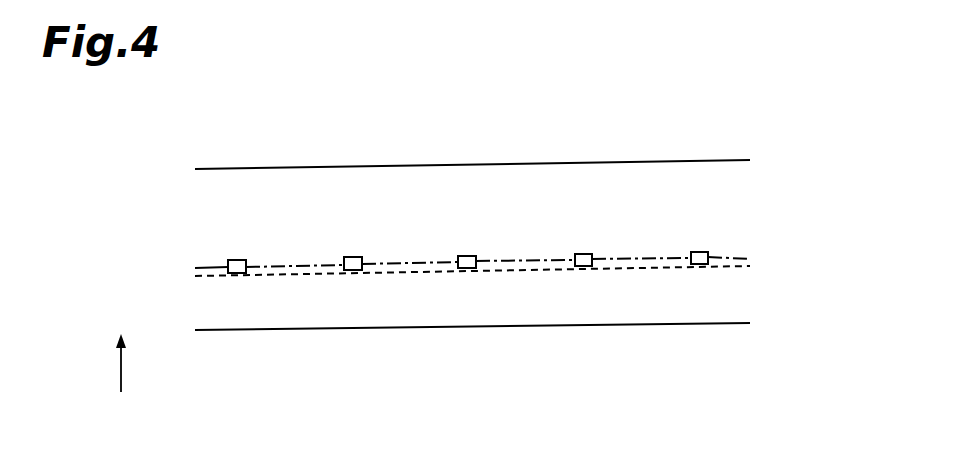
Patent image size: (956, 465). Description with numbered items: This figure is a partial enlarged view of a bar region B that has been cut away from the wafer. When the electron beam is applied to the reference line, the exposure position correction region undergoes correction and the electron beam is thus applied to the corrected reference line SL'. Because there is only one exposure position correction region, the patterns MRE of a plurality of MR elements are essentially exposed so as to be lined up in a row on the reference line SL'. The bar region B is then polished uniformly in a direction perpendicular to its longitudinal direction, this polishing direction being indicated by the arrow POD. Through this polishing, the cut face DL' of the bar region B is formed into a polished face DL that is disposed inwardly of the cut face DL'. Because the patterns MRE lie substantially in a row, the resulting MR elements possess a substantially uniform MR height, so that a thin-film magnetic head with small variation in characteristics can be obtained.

The bar region B is at (705, 161).
The reference line SL' is at (451, 248).
The polished face DL is at (533, 241).
The cut face DL' is at (511, 304).
The patterns of MR elements MRE is at (237, 260).
The polishing direction POD is at (121, 383).